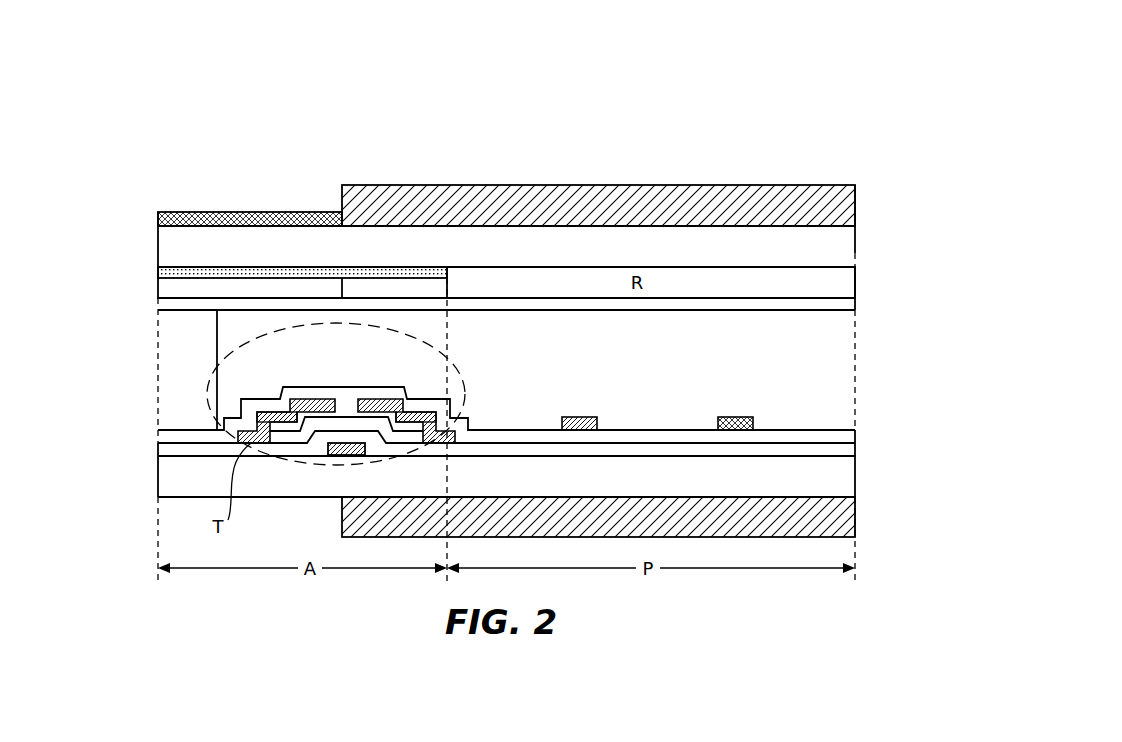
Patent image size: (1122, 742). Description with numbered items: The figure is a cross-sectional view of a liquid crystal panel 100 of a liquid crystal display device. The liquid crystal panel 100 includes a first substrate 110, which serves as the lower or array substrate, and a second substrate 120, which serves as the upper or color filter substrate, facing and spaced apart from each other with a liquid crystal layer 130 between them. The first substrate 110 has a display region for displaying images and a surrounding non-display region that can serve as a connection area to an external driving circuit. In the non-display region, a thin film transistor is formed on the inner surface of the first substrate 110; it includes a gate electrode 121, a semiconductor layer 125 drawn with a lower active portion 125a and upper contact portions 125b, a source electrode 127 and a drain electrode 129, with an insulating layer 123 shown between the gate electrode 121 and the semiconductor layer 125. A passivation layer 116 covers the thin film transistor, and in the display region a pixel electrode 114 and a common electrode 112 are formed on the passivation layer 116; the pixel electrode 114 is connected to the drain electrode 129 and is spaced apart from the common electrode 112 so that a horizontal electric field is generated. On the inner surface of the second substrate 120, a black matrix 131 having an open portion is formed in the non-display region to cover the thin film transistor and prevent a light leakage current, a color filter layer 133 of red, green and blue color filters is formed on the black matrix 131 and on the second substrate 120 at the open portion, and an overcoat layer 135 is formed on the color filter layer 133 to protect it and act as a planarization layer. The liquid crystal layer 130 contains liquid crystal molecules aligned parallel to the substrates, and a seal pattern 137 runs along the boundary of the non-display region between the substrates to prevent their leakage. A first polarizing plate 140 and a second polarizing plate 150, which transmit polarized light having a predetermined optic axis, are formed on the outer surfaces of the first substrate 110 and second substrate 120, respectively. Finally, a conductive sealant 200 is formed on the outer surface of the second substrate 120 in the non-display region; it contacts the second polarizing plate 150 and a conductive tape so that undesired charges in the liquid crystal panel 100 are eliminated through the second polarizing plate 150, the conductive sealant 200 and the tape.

The liquid crystal panel 100 is at (740, 124).
The first substrate 110 is at (180, 475).
The common electrode 112 is at (576, 417).
The pixel electrode 114 is at (738, 417).
The passivation layer 116 is at (496, 430).
The second substrate 120 is at (178, 250).
The gate electrode 121 is at (344, 446).
The gate insulating layer 123 is at (394, 399).
The semiconductor layer 125 is at (339, 380).
The active layer 125a is at (302, 431).
The ohmic contact layer 125b is at (267, 410).
The source electrode 127 is at (250, 427).
The drain electrode 129 is at (413, 410).
The liquid crystal layer 130 is at (837, 362).
The black matrix 131 is at (178, 272).
The color filter layer 133 is at (838, 285).
The overcoat layer 135 is at (178, 305).
The seal pattern 137 is at (178, 372).
The first polarizing plate 140 is at (838, 512).
The second polarizing plate 150 is at (525, 185).
The conductive sealant 200 is at (242, 212).